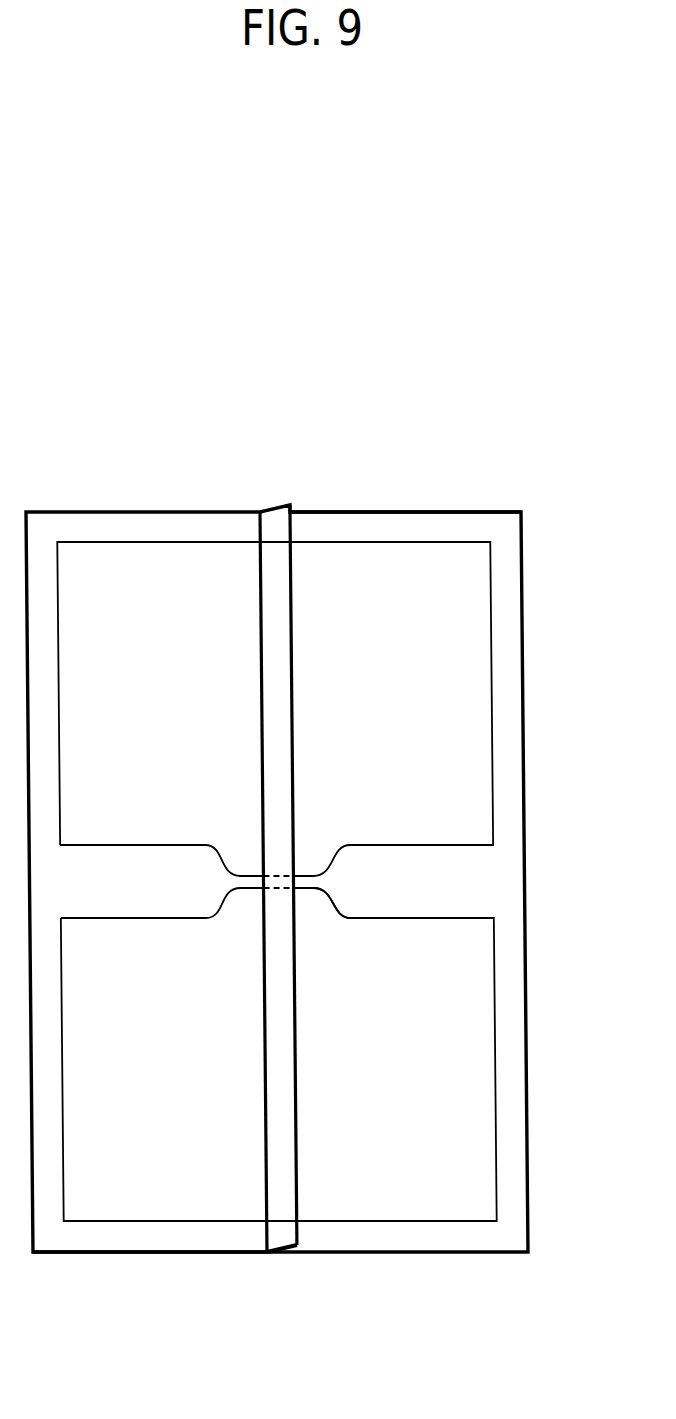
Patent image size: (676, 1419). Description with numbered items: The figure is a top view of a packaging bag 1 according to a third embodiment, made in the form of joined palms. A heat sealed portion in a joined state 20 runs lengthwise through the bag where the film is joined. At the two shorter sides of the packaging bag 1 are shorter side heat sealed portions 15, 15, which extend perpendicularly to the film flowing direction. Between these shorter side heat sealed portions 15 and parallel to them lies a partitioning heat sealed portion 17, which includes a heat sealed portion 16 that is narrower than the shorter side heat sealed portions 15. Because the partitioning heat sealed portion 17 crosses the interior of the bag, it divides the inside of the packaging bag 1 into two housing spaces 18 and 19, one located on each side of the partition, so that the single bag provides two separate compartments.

The packaging bag 1 is at (537, 588).
The shorter side heat sealed portion 15 is at (348, 528).
The heat sealed portion 16 is at (308, 878).
The partitioning heat sealed portion 17 is at (400, 903).
The housing space 18 is at (473, 723).
The housing space 19 is at (473, 1078).
The heat sealed portion in a joined state 20 is at (275, 718).